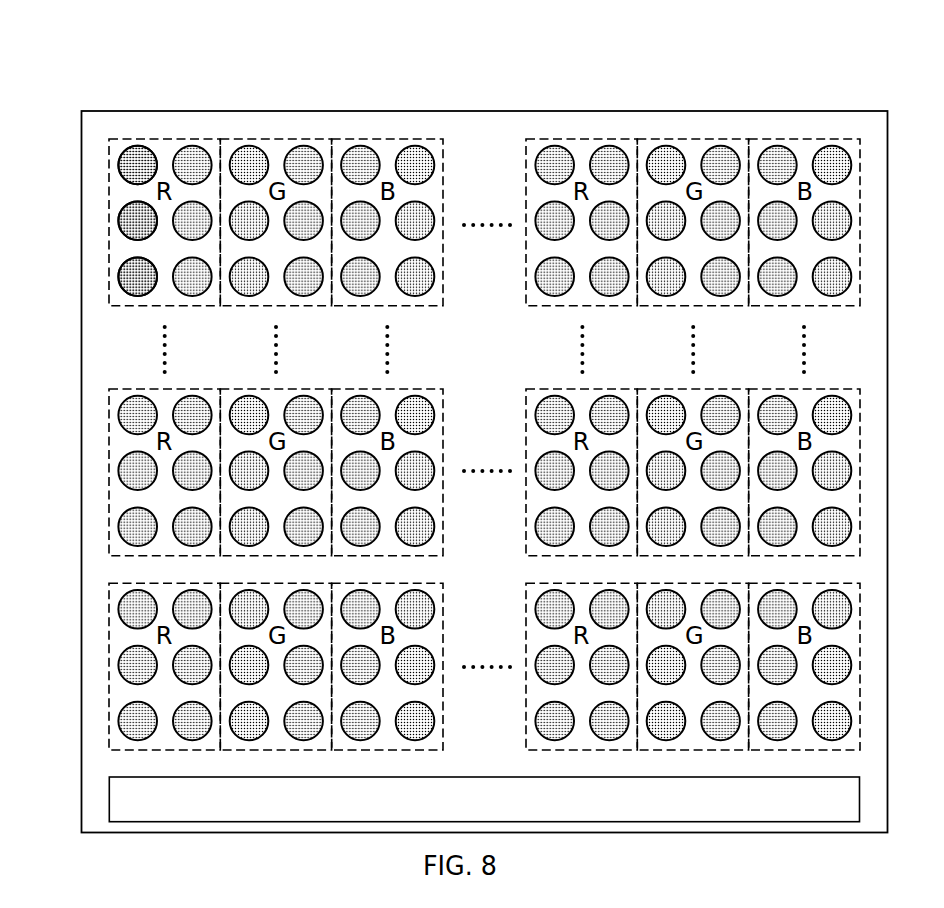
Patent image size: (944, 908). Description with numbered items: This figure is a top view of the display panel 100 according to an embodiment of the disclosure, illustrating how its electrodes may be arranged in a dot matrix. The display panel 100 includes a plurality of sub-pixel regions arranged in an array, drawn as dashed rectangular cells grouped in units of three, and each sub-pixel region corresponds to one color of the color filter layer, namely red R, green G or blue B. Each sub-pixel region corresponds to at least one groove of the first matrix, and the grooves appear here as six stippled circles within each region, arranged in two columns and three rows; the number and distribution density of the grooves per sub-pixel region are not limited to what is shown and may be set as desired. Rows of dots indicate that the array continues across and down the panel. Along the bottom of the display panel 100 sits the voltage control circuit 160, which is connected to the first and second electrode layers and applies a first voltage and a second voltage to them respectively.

The display panel 100 is at (98, 92).
The voltage control circuit 160 is at (502, 810).